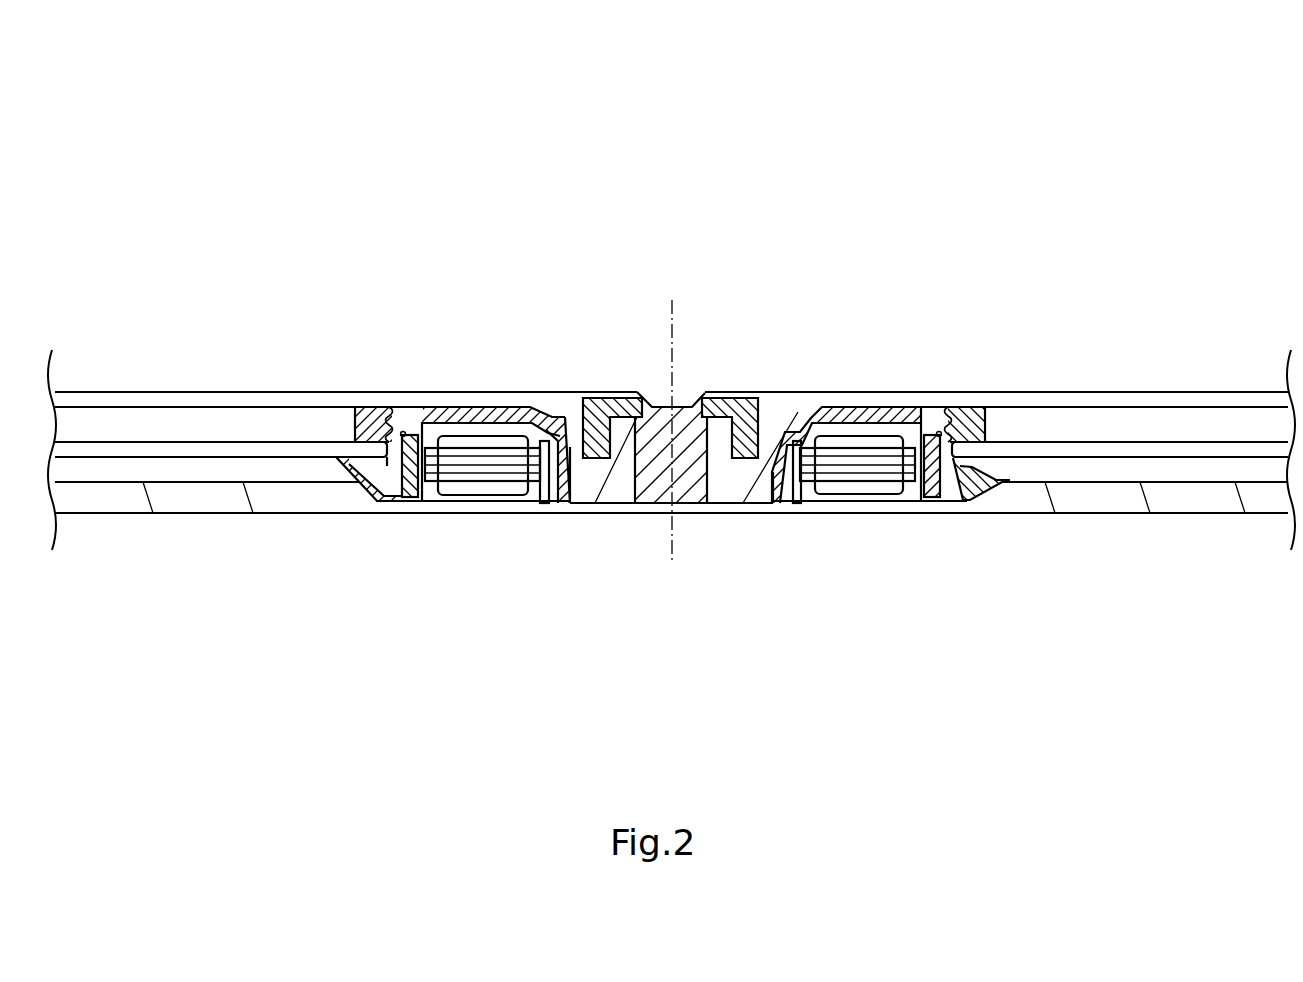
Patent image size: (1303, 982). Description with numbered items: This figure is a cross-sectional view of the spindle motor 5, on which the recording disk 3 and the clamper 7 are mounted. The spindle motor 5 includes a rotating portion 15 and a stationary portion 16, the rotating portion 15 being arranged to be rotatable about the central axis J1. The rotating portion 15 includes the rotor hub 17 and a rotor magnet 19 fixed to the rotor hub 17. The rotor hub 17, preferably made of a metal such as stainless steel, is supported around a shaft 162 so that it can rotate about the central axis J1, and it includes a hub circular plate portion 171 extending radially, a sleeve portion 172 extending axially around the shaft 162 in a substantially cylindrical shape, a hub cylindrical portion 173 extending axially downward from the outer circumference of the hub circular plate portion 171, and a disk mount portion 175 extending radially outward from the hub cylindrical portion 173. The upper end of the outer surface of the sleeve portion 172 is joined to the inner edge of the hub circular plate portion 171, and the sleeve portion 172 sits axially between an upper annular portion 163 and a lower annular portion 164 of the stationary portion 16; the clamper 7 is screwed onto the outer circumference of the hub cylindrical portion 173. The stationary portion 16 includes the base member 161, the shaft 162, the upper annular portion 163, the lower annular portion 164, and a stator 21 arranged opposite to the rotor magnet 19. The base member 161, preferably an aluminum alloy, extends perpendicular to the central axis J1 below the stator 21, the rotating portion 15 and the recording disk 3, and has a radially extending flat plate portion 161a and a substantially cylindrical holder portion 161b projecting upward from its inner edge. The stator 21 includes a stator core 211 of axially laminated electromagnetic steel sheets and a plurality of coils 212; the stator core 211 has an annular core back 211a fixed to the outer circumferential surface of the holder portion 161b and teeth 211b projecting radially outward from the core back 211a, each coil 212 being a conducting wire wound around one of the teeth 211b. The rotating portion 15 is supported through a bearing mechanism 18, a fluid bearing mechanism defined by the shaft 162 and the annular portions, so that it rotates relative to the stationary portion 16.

The spindle motor 5 is at (968, 226).
The recording disk 3 is at (1103, 447).
The central axis J1 is at (678, 325).
The clamper 7 is at (958, 425).
The rotating portion 15 is at (863, 402).
The stationary portion 16 is at (574, 520).
The base member 161 is at (935, 623).
The flat plate portion 161a is at (880, 508).
The holder portion 161b is at (805, 503).
The shaft 162 is at (685, 463).
The upper annular portion 163 is at (598, 470).
The lower annular portion 164 is at (612, 508).
The rotor hub 17 is at (583, 293).
The hub circular plate portion 171 is at (512, 418).
The sleeve portion 172 is at (578, 440).
The hub cylindrical portion 173 is at (396, 445).
The disk mount portion 175 is at (364, 472).
The bearing mechanism 18 is at (738, 383).
The rotor magnet 19 is at (404, 485).
The stator 21 is at (546, 603).
The stator core 211 is at (435, 470).
The core back 211a is at (803, 420).
The teeth 211b is at (895, 468).
The coils 212 is at (497, 486).